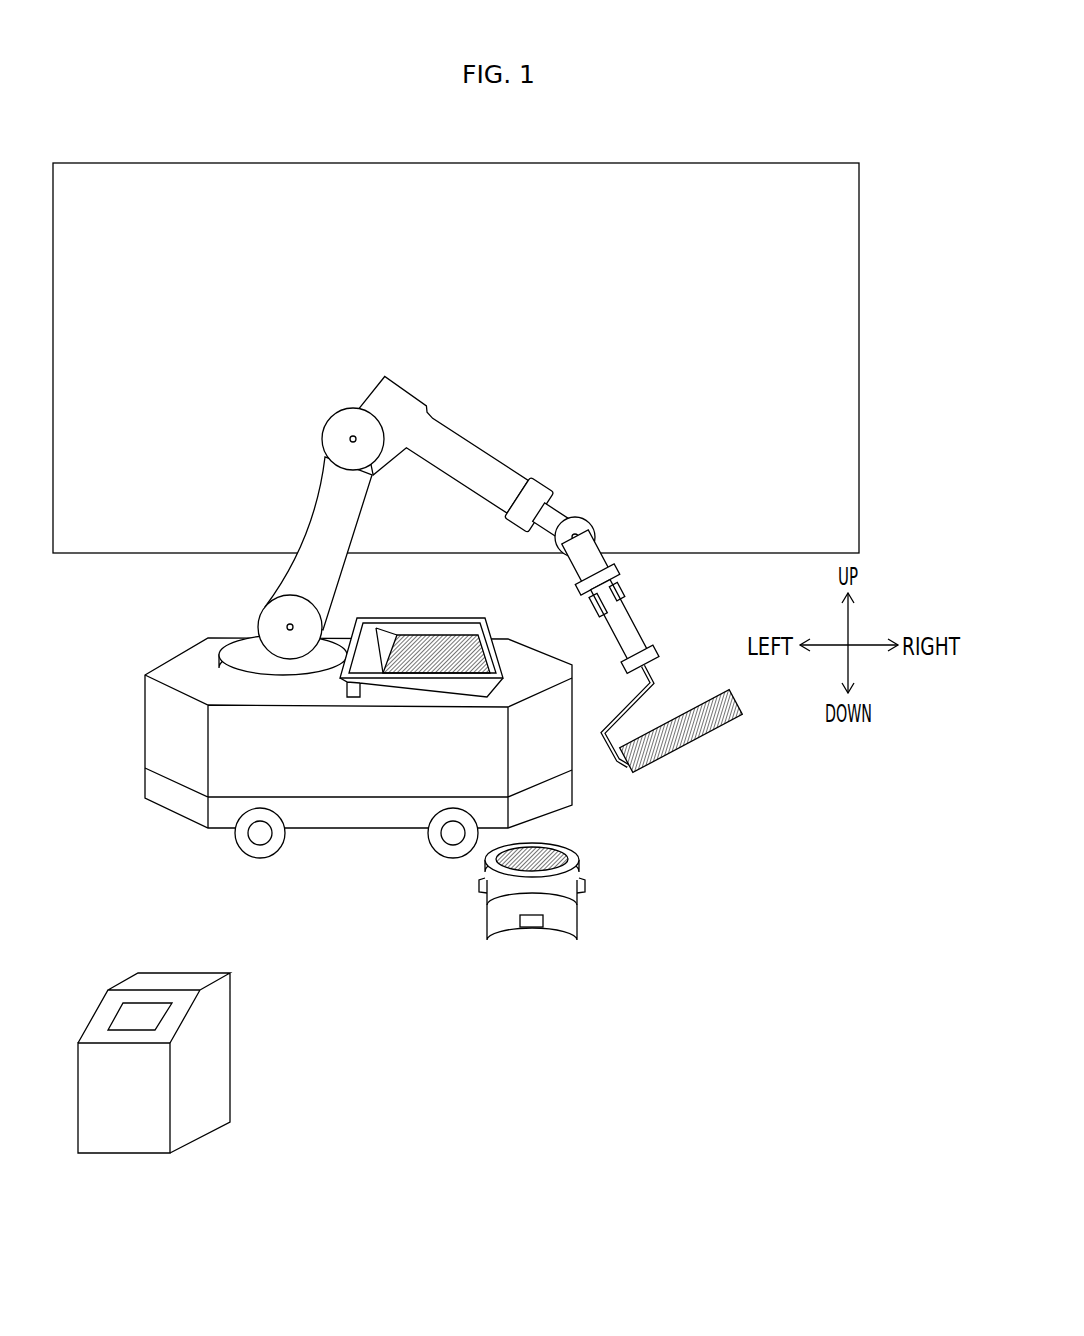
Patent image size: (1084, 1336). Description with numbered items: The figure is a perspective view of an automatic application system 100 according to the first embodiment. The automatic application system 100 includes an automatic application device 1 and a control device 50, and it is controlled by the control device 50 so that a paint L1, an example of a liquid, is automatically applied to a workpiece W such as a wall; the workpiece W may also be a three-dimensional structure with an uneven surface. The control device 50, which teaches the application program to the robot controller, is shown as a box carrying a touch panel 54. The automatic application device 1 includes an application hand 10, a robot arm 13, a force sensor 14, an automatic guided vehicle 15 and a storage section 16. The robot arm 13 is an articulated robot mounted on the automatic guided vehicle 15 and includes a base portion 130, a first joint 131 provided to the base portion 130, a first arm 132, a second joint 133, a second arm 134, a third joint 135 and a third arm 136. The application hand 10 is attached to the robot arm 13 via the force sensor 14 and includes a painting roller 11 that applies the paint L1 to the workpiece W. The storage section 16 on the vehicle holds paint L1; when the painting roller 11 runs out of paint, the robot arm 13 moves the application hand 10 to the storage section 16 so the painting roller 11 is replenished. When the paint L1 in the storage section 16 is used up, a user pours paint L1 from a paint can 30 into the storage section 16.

The workpiece W is at (822, 163).
The automatic application device 1 is at (428, 593).
The automatic application system 100 is at (398, 771).
The application hand 10 is at (641, 674).
The painting roller 11 is at (702, 700).
The robot arm 13 is at (393, 526).
The base portion 130 is at (220, 663).
The first joint 131 is at (265, 612).
The first arm 132 is at (320, 516).
The second joint 133 is at (326, 439).
The second arm 134 is at (467, 453).
The third joint 135 is at (592, 518).
The third arm 136 is at (578, 563).
The force sensor 14 is at (582, 591).
The automatic guided vehicle 15 is at (178, 693).
The storage section 16 is at (395, 618).
The paint L1 is at (463, 640).
The paint can 30 is at (537, 963).
The control device 50 is at (136, 1093).
The touch panel 54 is at (130, 1015).